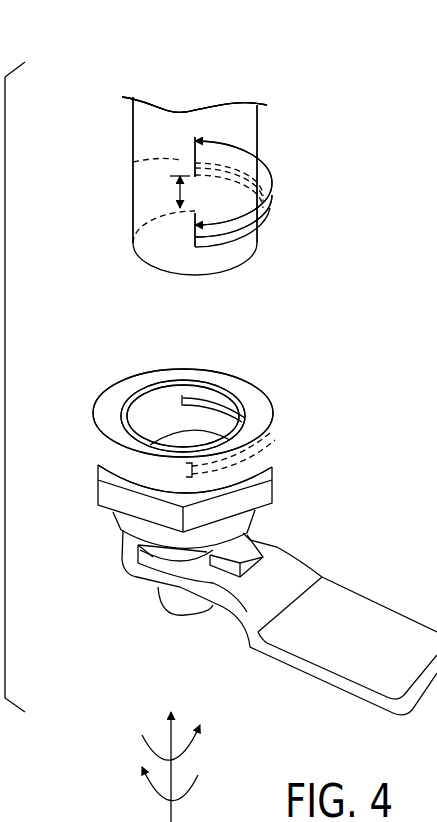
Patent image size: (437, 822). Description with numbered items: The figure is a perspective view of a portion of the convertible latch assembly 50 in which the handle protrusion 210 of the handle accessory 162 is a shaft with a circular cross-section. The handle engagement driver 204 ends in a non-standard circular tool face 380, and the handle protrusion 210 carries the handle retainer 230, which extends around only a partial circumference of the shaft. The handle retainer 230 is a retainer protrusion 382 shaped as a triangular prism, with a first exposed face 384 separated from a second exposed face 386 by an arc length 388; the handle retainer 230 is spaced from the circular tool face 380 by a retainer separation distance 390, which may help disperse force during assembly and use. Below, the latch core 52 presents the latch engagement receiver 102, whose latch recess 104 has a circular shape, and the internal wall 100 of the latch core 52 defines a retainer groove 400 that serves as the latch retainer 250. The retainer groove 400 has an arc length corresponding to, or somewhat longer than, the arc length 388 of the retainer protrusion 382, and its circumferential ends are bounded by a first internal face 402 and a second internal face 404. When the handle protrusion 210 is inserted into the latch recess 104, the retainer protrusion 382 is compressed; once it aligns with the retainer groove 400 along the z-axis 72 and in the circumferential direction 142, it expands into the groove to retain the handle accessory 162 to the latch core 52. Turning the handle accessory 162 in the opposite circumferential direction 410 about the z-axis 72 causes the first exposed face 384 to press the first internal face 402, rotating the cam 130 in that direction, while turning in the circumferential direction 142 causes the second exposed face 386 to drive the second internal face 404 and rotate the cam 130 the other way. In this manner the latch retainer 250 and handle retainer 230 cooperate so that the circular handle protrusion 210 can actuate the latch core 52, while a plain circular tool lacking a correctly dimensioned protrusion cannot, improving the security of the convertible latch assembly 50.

The convertible latch assembly 50 is at (180, 45).
The handle accessory 162 is at (208, 85).
The handle engagement driver 204 is at (90, 147).
The handle protrusion 210 is at (195, 170).
The handle retainer 230 is at (342, 187).
The circular tool face 380 is at (218, 262).
The retainer protrusion 382 is at (267, 213).
The first exposed face 384 is at (193, 245).
The second exposed face 386 is at (200, 158).
The arc length 388 is at (265, 177).
The retainer separation distance 390 is at (135, 161).
The internal wall 100 is at (157, 393).
The latch engagement receiver 102 is at (290, 372).
The latch recess 104 is at (183, 416).
The latch retainer 250 is at (200, 392).
The retainer groove 400 is at (250, 425).
The first internal face 402 is at (98, 465).
The second internal face 404 is at (182, 402).
The latch core 52 is at (138, 610).
The cam 130 is at (375, 598).
The z-axis 72 is at (166, 716).
The circumferential direction 142 is at (190, 752).
The opposite circumferential direction 410 is at (143, 797).